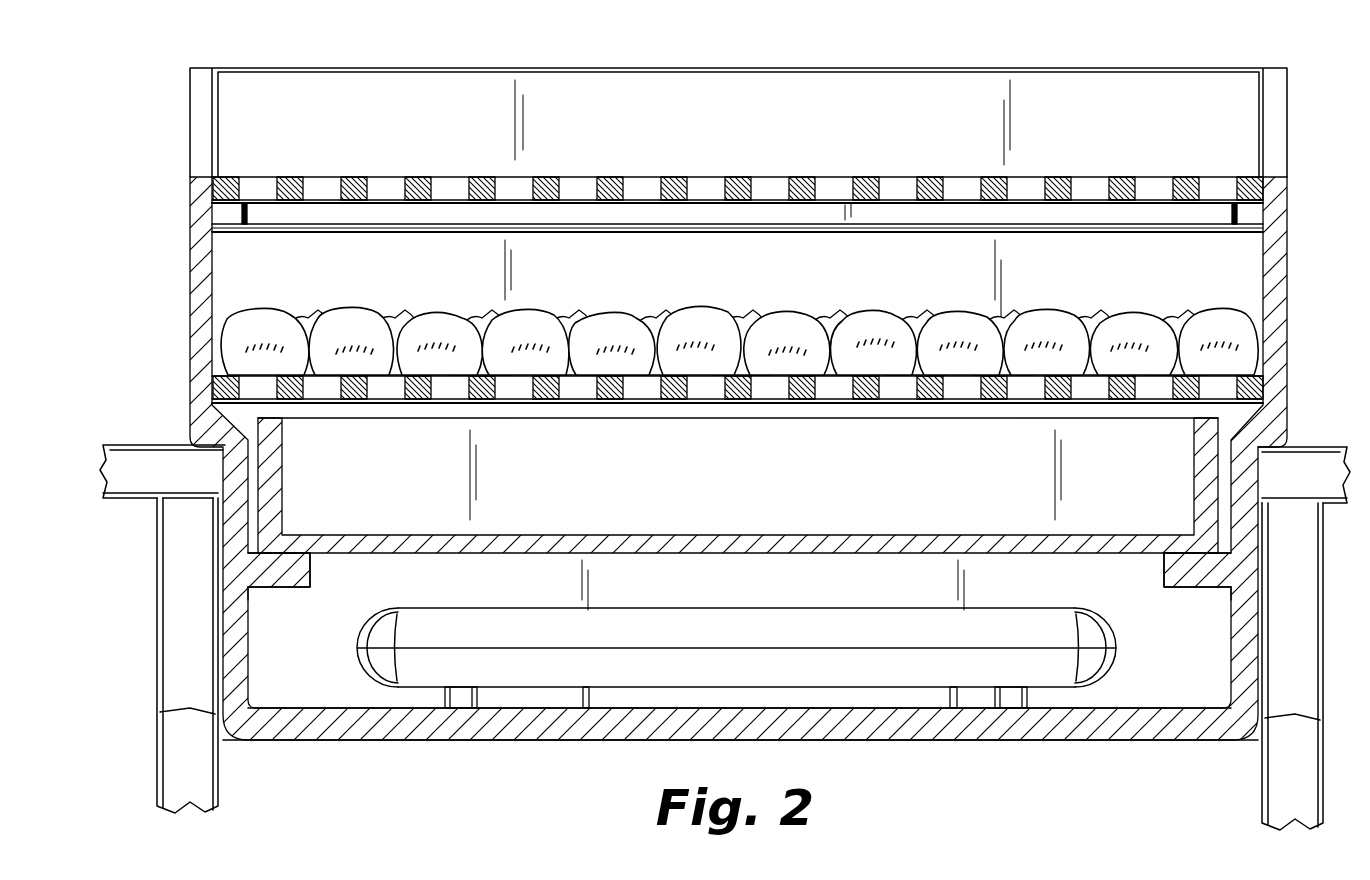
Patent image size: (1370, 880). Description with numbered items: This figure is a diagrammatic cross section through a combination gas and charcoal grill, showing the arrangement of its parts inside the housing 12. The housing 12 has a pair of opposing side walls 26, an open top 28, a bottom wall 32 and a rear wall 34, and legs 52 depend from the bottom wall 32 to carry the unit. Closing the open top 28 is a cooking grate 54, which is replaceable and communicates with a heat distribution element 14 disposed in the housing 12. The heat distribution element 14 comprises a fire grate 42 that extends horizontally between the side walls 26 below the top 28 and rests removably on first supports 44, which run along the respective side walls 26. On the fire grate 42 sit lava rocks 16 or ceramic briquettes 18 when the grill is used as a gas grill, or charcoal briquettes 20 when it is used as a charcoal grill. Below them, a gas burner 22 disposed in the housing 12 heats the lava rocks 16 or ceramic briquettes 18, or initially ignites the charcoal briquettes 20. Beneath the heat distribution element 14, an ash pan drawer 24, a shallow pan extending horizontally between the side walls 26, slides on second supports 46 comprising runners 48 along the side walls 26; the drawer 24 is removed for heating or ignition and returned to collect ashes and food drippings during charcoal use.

The housing 12 is at (1318, 128).
The heat distribution element 14 is at (1242, 269).
The lava rocks 16 is at (805, 335).
The ceramic briquettes 18 is at (1040, 322).
The charcoal briquettes 20 is at (420, 316).
The gas burner 22 is at (497, 633).
The ash pan drawer 24 is at (722, 498).
The side walls 26 is at (190, 273).
The top 28 is at (861, 163).
The bottom wall 32 is at (400, 740).
The rear wall 34 is at (736, 92).
The fire grate 42 is at (838, 403).
The first supports 44 is at (200, 423).
The second supports 46 is at (309, 601).
The runners 48 is at (285, 590).
The legs 52 is at (172, 762).
The cooking grate 54 is at (380, 190).